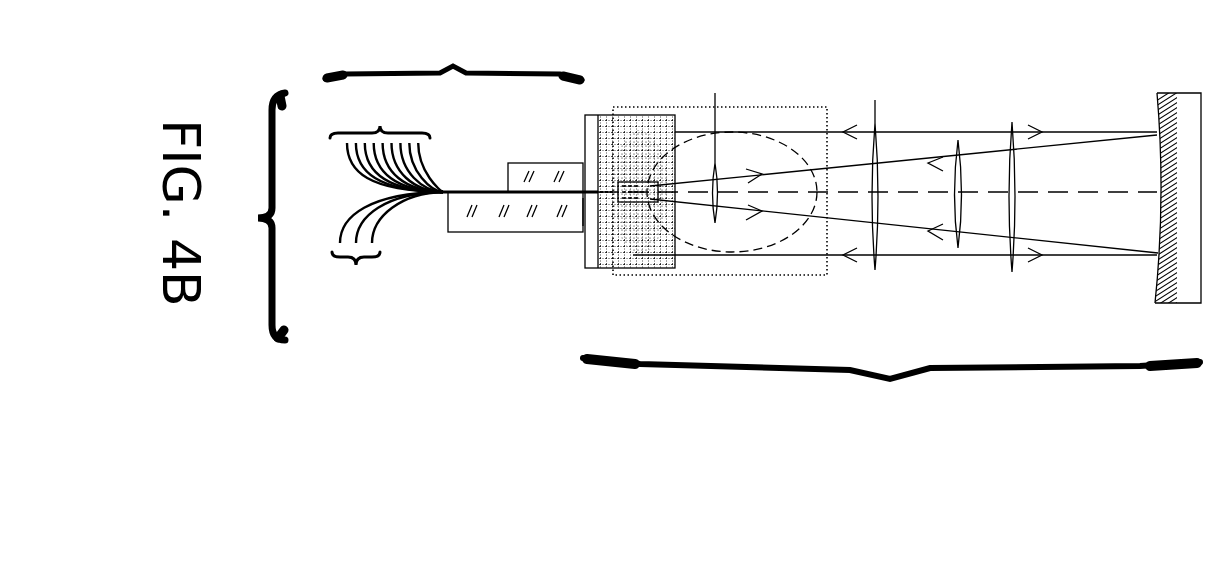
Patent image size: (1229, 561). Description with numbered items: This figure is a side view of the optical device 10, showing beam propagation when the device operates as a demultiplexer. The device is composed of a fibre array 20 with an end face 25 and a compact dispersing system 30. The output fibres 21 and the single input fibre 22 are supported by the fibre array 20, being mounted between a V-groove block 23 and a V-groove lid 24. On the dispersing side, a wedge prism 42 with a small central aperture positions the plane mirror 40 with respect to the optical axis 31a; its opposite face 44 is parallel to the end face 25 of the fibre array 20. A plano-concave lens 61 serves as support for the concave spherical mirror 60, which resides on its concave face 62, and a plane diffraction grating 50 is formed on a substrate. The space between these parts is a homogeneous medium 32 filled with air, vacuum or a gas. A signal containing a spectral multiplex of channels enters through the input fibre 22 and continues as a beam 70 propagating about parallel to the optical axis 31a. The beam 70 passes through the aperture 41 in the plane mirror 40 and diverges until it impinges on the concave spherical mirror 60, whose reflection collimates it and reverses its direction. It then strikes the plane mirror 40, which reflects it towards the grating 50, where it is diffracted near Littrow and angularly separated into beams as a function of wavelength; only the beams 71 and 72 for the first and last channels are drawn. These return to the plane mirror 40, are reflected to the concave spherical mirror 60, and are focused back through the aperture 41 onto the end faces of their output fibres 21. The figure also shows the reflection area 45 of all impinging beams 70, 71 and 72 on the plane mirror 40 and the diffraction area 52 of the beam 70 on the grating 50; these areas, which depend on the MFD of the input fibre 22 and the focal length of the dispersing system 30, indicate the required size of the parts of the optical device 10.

The optical device 10 is at (252, 216).
The fibre array 20 is at (453, 56).
The output fibres 21 is at (386, 142).
The input fibre 22 is at (387, 249).
The V-groove block 23 is at (483, 217).
The V-groove lid 24 is at (548, 177).
The end face 25 is at (581, 214).
The compact dispersing system 30 is at (891, 390).
The optical axis 31a is at (1082, 193).
The homogeneous medium 32 is at (1088, 105).
The plane mirror 40 is at (650, 262).
The aperture 41 is at (635, 184).
The wedge prism 42 is at (592, 135).
The opposite face 44 is at (585, 266).
The reflection area 45 is at (637, 234).
The plane diffraction grating 50 is at (813, 265).
The diffraction area 52 is at (790, 150).
The concave spherical mirror 60 is at (1160, 247).
The plano-concave lens 61 is at (1190, 108).
The concave face 62 is at (1158, 298).
The beam 70 is at (796, 168).
The beam 71 is at (979, 140).
The beam 72 is at (1010, 122).